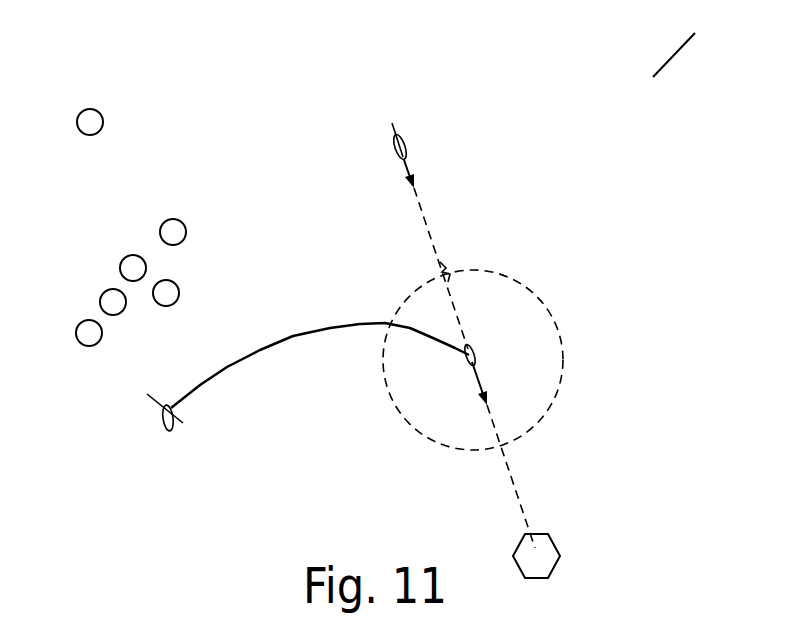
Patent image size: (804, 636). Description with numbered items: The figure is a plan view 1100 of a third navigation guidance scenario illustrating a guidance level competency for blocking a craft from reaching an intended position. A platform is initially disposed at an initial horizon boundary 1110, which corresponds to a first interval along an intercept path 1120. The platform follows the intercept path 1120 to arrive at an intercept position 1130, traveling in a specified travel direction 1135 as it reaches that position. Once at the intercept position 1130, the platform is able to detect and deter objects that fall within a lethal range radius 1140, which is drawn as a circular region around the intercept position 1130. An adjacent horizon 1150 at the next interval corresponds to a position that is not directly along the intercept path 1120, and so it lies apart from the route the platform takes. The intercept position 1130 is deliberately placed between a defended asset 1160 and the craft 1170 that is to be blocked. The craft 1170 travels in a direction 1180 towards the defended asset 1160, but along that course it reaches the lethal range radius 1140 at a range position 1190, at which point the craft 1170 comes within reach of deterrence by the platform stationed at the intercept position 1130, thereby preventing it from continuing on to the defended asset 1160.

The plan view 1100 is at (134, 47).
The initial horizon boundary 1110 is at (177, 417).
The intercept path 1120 is at (300, 333).
The intercept position 1130 is at (475, 358).
The specified travel direction 1135 is at (490, 408).
The lethal range radius 1140 is at (558, 320).
The adjacent horizon 1150 is at (668, 60).
The defended asset 1160 is at (560, 548).
The craft 1170 is at (405, 145).
The direction 1180 is at (415, 186).
The range position 1190 is at (452, 257).